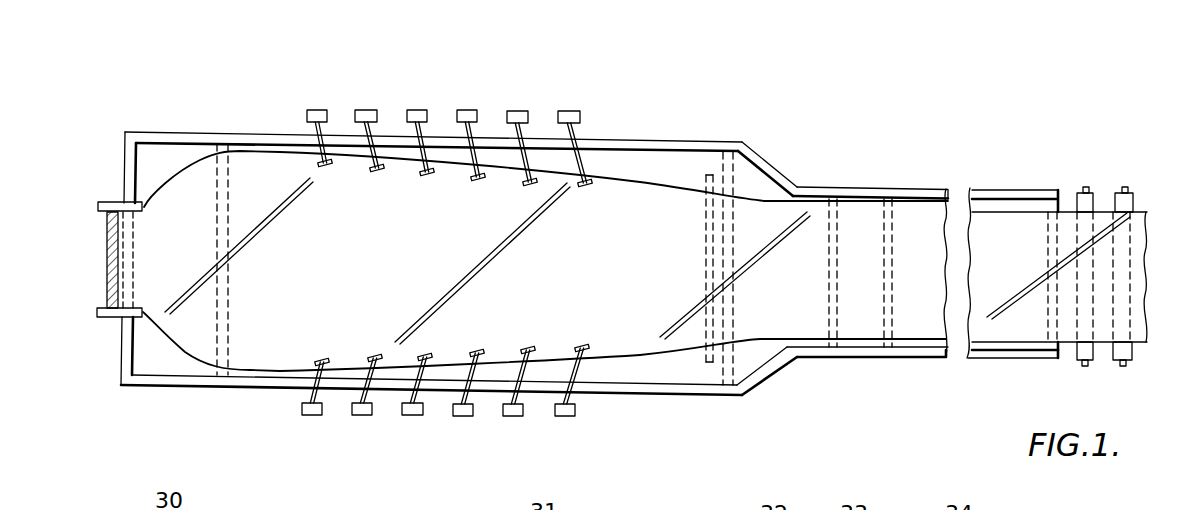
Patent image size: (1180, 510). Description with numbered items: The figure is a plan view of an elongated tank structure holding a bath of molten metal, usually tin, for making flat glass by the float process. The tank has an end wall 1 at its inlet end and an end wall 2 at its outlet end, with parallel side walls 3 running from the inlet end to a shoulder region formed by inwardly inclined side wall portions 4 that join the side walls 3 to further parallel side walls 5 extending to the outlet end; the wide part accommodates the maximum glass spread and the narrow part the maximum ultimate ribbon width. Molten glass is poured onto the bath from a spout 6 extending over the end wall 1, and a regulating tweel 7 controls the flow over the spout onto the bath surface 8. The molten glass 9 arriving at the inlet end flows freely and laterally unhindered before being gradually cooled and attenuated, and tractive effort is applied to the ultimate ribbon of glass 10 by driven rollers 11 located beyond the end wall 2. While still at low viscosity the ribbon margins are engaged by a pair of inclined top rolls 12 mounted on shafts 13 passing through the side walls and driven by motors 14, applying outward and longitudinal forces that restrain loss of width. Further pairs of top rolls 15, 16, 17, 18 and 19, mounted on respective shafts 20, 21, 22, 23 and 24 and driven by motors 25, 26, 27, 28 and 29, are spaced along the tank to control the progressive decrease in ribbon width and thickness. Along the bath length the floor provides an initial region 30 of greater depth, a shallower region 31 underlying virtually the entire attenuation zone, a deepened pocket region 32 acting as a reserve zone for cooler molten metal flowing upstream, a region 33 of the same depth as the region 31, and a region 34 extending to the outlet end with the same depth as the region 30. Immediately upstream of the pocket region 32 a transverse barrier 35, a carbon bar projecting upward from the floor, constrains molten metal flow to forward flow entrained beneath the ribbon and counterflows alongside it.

The end wall 1 is at (128, 163).
The end wall 2 is at (1055, 200).
The side walls 3 is at (202, 138).
The inwardly inclined side wall portions 4 is at (772, 166).
The further parallel side walls 5 is at (900, 190).
The spout 6 is at (110, 312).
The regulating tweel 7 is at (107, 230).
The bath surface 8 is at (157, 155).
The molten glass 9 is at (193, 251).
The ultimate ribbon of glass 10 is at (1140, 217).
The driven rollers 11 is at (1087, 362).
The inclined top rolls 12 is at (330, 164).
The shafts 13 is at (310, 128).
The motors 14 is at (307, 108).
The top rolls 15 is at (379, 169).
The top rolls 16 is at (430, 174).
The top rolls 17 is at (478, 178).
The top rolls 18 is at (530, 183).
The top rolls 19 is at (585, 184).
The shaft 20 is at (363, 130).
The shaft 21 is at (412, 130).
The shaft 22 is at (462, 128).
The shaft 23 is at (510, 129).
The shaft 24 is at (562, 130).
The motor 25 is at (367, 108).
The motor 26 is at (420, 108).
The motor 27 is at (470, 108).
The motor 28 is at (520, 109).
The motor 29 is at (572, 109).
The initial region 30 is at (195, 367).
The shallower region 31 is at (624, 162).
The pocket region 32 is at (808, 198).
The region 33 is at (862, 343).
The region 34 is at (1008, 346).
The transverse barrier 35 is at (705, 362).